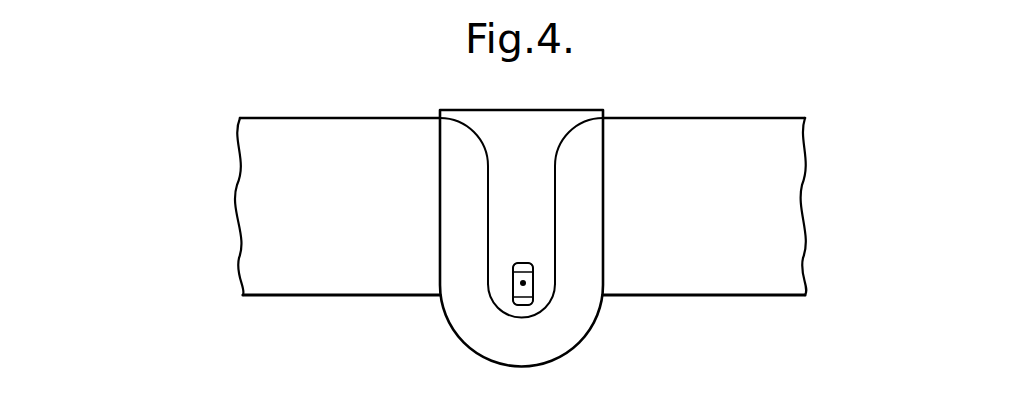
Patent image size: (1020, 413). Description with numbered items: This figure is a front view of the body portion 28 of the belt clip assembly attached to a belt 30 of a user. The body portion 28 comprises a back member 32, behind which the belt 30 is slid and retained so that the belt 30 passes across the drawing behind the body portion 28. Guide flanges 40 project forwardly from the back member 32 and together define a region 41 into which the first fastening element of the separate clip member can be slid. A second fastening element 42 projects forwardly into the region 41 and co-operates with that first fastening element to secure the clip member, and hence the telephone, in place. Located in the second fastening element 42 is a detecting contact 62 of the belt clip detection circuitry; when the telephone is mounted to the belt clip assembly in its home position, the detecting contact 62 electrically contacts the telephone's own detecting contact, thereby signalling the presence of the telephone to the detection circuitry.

The body portion 28 is at (580, 94).
The belt 30 is at (353, 145).
The back member 32 is at (510, 128).
The guide flanges 40 is at (579, 304).
The region 41 is at (500, 236).
The second fastening element 42 is at (513, 270).
The detecting contact 62 is at (523, 283).